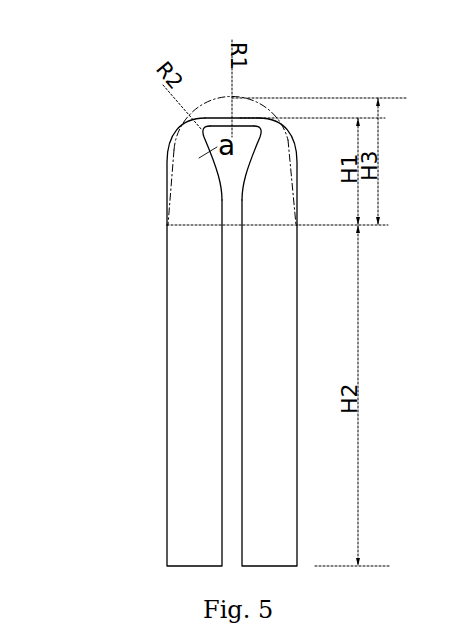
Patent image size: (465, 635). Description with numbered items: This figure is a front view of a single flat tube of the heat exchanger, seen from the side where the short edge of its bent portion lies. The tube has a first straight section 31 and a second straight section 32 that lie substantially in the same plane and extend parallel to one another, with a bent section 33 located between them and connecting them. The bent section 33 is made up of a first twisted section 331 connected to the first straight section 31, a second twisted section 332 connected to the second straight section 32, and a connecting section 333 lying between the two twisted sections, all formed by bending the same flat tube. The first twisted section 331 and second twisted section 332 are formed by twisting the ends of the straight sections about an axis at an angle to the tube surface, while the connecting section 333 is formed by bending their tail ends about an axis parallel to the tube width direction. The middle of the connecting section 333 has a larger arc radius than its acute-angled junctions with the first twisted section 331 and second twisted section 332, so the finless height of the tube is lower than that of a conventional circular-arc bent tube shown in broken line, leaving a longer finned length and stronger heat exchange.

The first straight section 31 is at (176, 369).
The second straight section 32 is at (286, 379).
The bent section 33 is at (260, 132).
The first twisted section 331 is at (179, 193).
The second twisted section 332 is at (279, 189).
The connecting section 333 is at (250, 113).